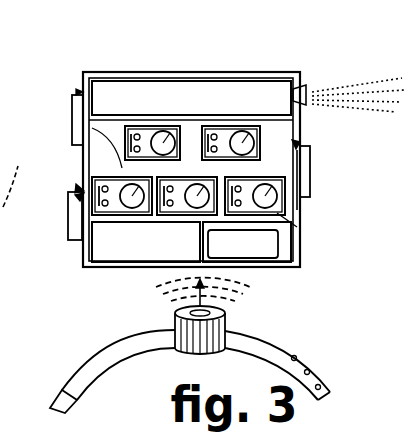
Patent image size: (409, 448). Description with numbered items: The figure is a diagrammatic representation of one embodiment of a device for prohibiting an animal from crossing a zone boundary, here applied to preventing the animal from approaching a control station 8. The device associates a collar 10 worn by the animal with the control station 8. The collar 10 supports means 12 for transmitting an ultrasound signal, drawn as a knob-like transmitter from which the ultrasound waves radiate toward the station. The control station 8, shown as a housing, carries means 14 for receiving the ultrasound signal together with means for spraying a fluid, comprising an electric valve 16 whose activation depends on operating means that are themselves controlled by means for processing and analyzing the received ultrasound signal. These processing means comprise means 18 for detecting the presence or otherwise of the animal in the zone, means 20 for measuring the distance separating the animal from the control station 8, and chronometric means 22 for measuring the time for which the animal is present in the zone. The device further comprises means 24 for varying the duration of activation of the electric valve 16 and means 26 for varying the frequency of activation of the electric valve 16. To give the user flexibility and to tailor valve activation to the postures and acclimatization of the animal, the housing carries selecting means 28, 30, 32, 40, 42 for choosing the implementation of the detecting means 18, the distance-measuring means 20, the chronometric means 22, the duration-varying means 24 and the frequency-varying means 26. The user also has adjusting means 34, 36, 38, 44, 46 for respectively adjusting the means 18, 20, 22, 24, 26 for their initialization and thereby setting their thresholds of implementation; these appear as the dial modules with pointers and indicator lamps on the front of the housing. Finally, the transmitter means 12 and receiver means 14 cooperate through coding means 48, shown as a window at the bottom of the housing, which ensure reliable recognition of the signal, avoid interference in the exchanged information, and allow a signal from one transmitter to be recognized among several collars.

The control station 8 is at (84, 72).
The collar 10 is at (92, 392).
The means for transmitting an ultrasound signal 12 is at (150, 312).
The means for receiving the ultrasound signal 14 is at (265, 268).
The electric valve 16 is at (278, 78).
The means for detecting the presence of the animal in the zone 18 is at (80, 187).
The means for measuring the distance 20 is at (186, 204).
The chronometric means 22 is at (308, 180).
The means for varying the duration of activation of the electric valve 24 is at (73, 128).
The means for varying the frequency of activation of the electric valve 26 is at (298, 134).
The selecting means 28 is at (68, 205).
The selecting means 30 is at (157, 227).
The selecting means 32 is at (298, 227).
The adjusting means 34 is at (122, 170).
The adjusting means 36 is at (132, 268).
The adjusting means 38 is at (298, 220).
The selecting means 40 is at (118, 128).
The selecting means 42 is at (200, 128).
The adjusting means 44 is at (157, 133).
The adjusting means 46 is at (240, 138).
The coding means 48 is at (278, 247).